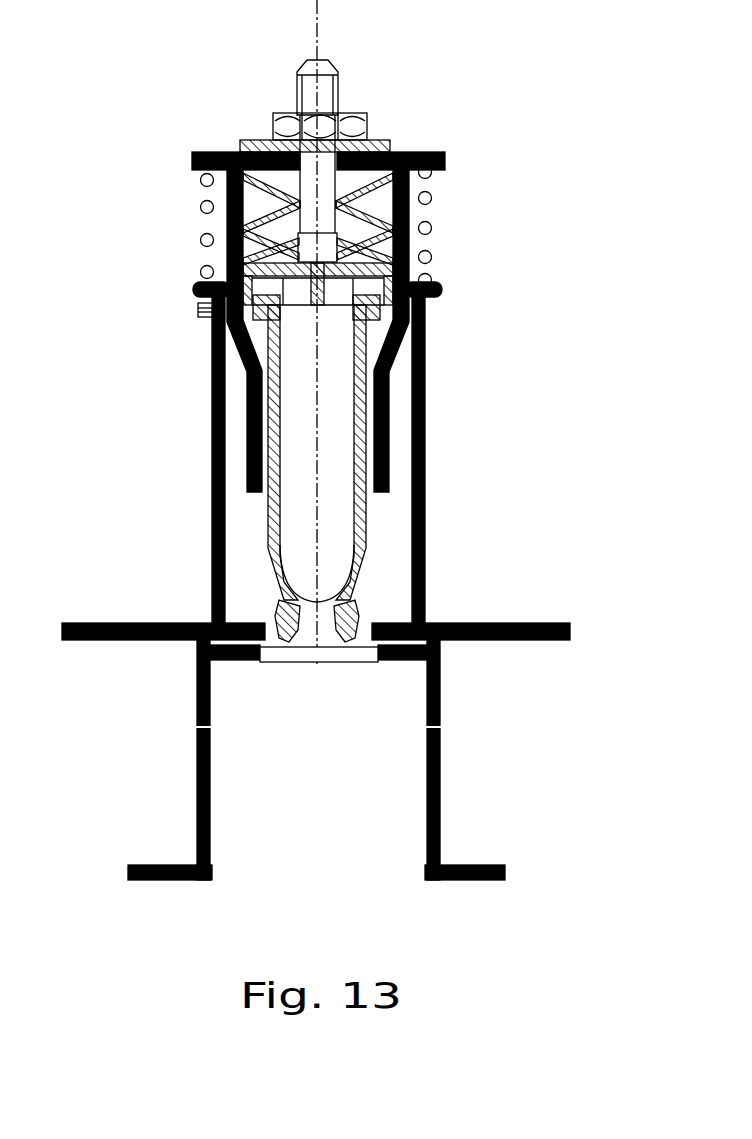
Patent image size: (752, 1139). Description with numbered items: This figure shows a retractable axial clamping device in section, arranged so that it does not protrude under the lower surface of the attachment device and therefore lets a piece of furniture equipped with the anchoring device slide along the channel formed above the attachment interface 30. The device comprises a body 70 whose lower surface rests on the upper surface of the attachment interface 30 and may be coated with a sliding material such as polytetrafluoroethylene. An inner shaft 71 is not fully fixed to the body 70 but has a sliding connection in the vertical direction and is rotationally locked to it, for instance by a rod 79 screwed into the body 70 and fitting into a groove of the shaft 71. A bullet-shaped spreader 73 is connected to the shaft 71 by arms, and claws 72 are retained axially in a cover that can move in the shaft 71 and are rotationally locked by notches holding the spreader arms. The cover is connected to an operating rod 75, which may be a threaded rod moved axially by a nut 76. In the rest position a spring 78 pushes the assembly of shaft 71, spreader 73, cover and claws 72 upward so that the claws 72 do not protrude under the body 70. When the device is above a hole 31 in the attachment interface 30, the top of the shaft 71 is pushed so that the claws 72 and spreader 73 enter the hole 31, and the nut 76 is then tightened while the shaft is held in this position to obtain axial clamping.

The attachment interface 30 is at (234, 656).
The hole 31 is at (287, 655).
The body 70 is at (420, 452).
The inner shaft 71 is at (247, 410).
The claws 72 is at (337, 650).
The bullet-shaped spreader 73 is at (327, 515).
The operating rod 75 is at (328, 85).
The nut 76 is at (353, 125).
The spring 78 is at (427, 227).
The rod 79 is at (197, 305).